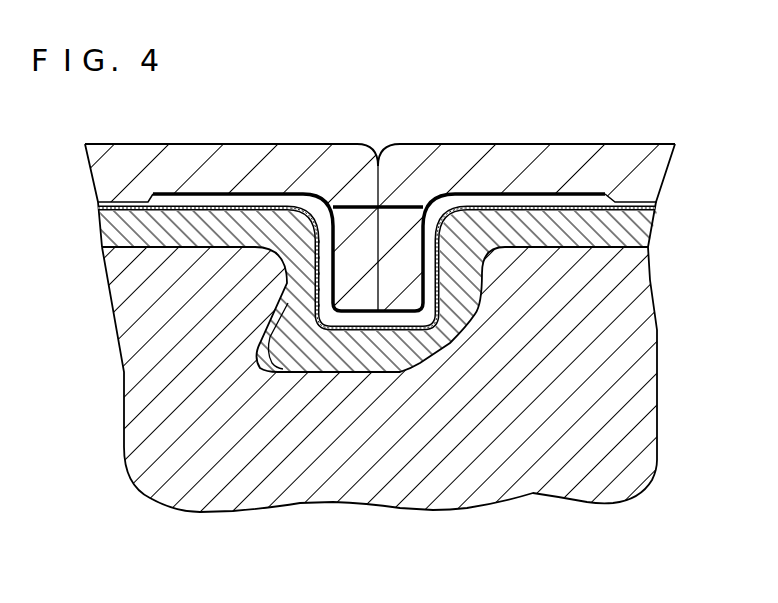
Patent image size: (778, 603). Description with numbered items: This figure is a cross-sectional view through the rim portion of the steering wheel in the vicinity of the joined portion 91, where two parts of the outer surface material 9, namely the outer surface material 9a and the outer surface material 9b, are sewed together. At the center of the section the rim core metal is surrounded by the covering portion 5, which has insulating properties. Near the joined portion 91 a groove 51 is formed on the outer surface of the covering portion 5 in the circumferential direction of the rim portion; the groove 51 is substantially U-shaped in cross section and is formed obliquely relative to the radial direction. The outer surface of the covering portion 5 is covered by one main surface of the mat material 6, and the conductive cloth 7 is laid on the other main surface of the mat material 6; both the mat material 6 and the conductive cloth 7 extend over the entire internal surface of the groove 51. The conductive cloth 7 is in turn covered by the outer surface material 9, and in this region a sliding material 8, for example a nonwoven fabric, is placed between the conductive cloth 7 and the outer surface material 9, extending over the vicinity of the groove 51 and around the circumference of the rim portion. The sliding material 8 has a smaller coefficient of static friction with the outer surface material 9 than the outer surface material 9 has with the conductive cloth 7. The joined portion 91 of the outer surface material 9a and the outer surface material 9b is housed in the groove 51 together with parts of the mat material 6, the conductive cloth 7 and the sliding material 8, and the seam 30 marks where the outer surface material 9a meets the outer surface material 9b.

The covering portion 5 is at (640, 366).
The groove 51 is at (252, 368).
The mat material 6 is at (643, 237).
The conductive cloth 7 is at (653, 209).
The sliding material 8 is at (598, 196).
The outer surface material 9 is at (389, 301).
The outer surface material 9a is at (227, 144).
The outer surface material 9b is at (505, 144).
The joined portion 91 is at (385, 123).
The seam 30 is at (350, 205).